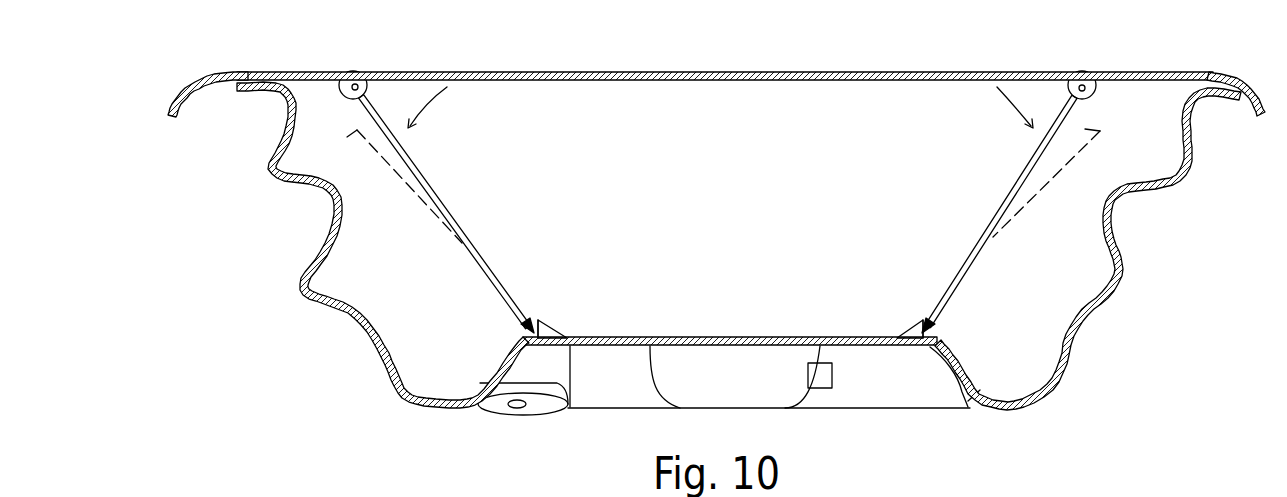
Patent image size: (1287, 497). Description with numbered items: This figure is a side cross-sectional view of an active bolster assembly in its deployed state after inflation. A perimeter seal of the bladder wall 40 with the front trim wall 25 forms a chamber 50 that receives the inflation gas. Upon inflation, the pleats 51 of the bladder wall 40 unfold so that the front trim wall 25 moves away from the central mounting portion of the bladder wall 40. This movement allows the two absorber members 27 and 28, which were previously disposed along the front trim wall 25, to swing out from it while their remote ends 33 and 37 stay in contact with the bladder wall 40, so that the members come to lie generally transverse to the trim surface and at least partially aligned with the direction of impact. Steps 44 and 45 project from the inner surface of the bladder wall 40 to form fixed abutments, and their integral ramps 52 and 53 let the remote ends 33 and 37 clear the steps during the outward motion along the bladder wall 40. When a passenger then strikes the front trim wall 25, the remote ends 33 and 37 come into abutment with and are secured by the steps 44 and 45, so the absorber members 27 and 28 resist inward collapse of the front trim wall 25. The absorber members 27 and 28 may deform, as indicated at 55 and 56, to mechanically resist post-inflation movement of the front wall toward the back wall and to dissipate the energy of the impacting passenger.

The front trim wall 25 is at (577, 66).
The absorber member 27 is at (483, 248).
The absorber member 28 is at (970, 237).
The remote end 33 is at (519, 319).
The remote end 37 is at (938, 322).
The bladder wall 40 is at (627, 419).
The step 44 is at (543, 319).
The step 45 is at (918, 340).
The chamber 50 is at (741, 191).
The pleats 51 is at (307, 263).
The ramp 52 is at (553, 335).
The ramp 53 is at (913, 333).
The deformed position 55 is at (385, 172).
The deformed position 56 is at (1064, 170).